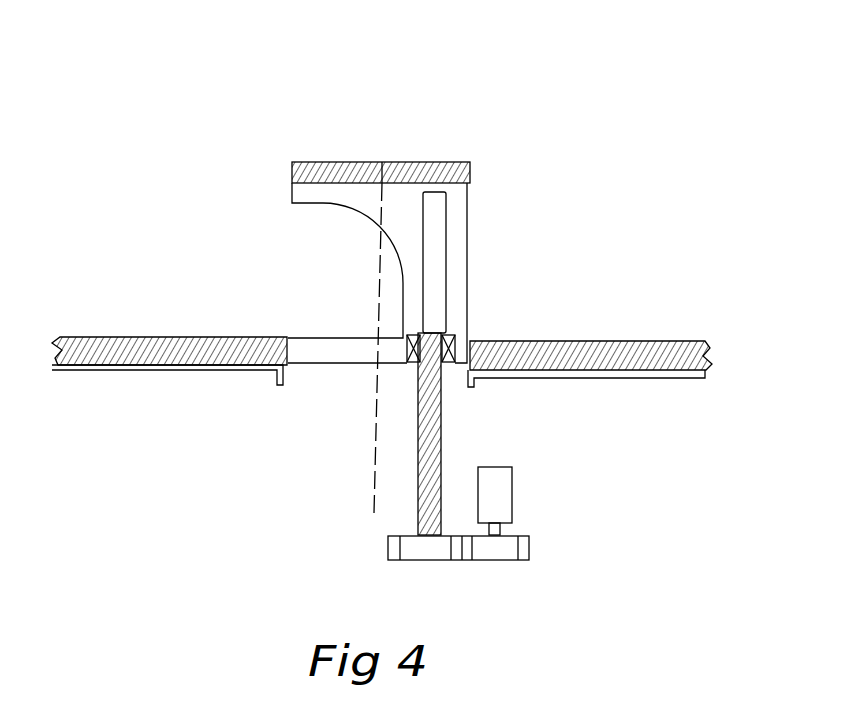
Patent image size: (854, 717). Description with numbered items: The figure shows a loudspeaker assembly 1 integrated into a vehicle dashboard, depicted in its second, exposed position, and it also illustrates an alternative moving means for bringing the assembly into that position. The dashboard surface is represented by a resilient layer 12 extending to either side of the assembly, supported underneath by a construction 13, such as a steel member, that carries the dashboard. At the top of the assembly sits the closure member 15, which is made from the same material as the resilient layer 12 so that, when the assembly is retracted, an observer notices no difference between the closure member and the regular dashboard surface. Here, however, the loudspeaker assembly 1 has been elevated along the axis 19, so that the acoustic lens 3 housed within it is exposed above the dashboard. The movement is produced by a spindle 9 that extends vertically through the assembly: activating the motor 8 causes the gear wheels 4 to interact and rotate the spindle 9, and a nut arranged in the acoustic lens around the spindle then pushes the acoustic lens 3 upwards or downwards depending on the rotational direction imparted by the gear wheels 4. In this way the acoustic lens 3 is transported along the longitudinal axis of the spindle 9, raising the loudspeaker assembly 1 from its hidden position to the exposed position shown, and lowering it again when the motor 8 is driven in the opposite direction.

The axis 19 is at (348, 135).
The closure member 15 is at (413, 162).
The acoustic lens 3 is at (462, 227).
The loudspeaker assembly 1 is at (493, 256).
The resilient layer 12 is at (122, 340).
The construction 13 is at (167, 370).
The spindle 9 is at (418, 422).
The motor 8 is at (497, 488).
The gear wheels 4 is at (434, 548).